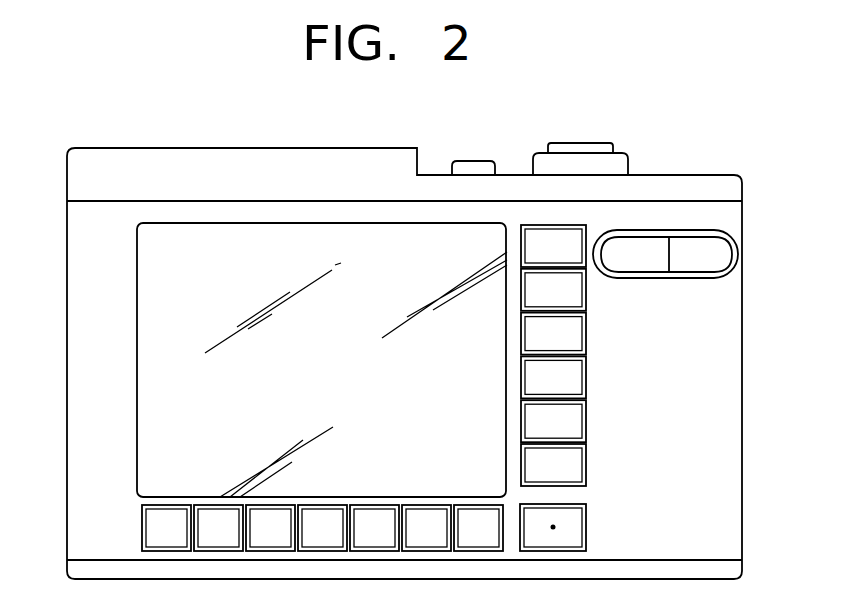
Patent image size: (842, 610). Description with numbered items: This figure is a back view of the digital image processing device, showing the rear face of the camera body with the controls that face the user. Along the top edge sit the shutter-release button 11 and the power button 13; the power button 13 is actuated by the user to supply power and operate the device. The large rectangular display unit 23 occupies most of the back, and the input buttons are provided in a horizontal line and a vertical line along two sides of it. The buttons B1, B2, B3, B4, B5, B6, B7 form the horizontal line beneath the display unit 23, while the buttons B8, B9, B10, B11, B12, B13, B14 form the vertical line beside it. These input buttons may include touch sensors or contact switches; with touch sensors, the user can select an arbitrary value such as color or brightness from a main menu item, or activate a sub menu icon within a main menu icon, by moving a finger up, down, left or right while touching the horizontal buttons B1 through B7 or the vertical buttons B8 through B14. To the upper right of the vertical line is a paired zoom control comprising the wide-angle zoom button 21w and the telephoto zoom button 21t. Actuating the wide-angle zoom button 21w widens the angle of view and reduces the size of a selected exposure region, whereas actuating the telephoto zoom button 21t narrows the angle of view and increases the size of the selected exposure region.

The shutter-release button 11 is at (580, 148).
The power button 13 is at (473, 160).
The display unit 23 is at (214, 237).
The wide-angle zoom button 21w is at (665, 254).
The telephoto zoom button 21t is at (700, 254).
The input button B1 is at (166, 528).
The input button B2 is at (218, 528).
The input button B3 is at (270, 528).
The input button B4 is at (322, 528).
The input button B5 is at (374, 528).
The input button B6 is at (426, 528).
The input button B7 is at (478, 528).
The input button B8 is at (553, 246).
The input button B9 is at (553, 290).
The input button B10 is at (553, 334).
The input button B11 is at (553, 377).
The input button B12 is at (553, 421).
The input button B13 is at (553, 465).
The input button B14 is at (586, 528).